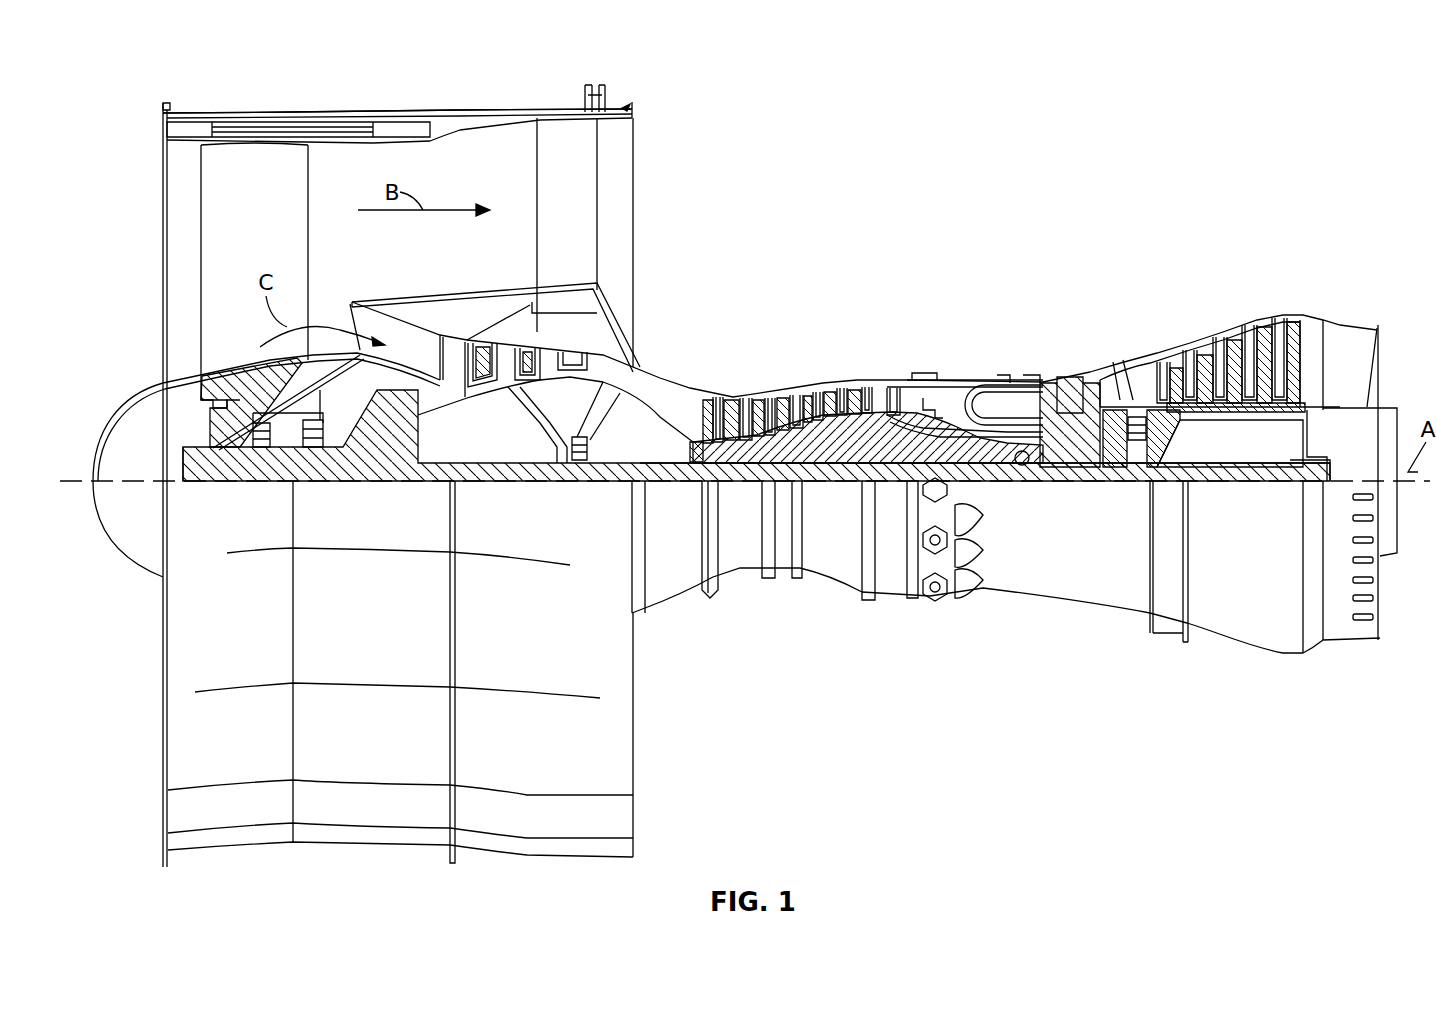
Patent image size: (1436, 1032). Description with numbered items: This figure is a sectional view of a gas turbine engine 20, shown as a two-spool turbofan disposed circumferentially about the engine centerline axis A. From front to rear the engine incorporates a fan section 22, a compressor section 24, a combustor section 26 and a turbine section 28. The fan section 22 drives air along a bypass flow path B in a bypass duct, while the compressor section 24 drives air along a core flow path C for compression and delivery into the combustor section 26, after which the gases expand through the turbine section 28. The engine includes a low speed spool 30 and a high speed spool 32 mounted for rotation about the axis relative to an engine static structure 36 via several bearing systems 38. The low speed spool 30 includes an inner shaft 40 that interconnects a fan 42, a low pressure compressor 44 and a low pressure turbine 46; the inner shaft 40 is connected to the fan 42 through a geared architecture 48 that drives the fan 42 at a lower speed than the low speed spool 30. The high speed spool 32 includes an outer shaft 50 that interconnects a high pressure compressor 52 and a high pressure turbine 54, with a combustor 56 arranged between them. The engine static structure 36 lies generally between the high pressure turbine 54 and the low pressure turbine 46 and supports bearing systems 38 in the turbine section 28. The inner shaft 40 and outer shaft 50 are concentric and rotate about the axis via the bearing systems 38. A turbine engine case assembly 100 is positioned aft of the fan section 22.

The gas turbine engine 20 is at (1264, 83).
The fan section 22 is at (157, 102).
The compressor section 24 is at (465, 243).
The combustor section 26 is at (993, 325).
The turbine section 28 is at (1220, 418).
The low speed spool 30 is at (851, 484).
The high speed spool 32 is at (905, 400).
The engine static structure 36 is at (893, 597).
The bearing systems 38 is at (262, 447).
The inner shaft 40 is at (652, 485).
The fan 42 is at (235, 229).
The low pressure compressor 44 is at (548, 350).
The low pressure turbine 46 is at (1231, 342).
The geared architecture 48 is at (398, 447).
The outer shaft 50 is at (1027, 470).
The high pressure compressor 52 is at (788, 398).
The high pressure turbine 54 is at (1070, 378).
The combustor 56 is at (988, 402).
The turbine engine case assembly 100 is at (533, 107).